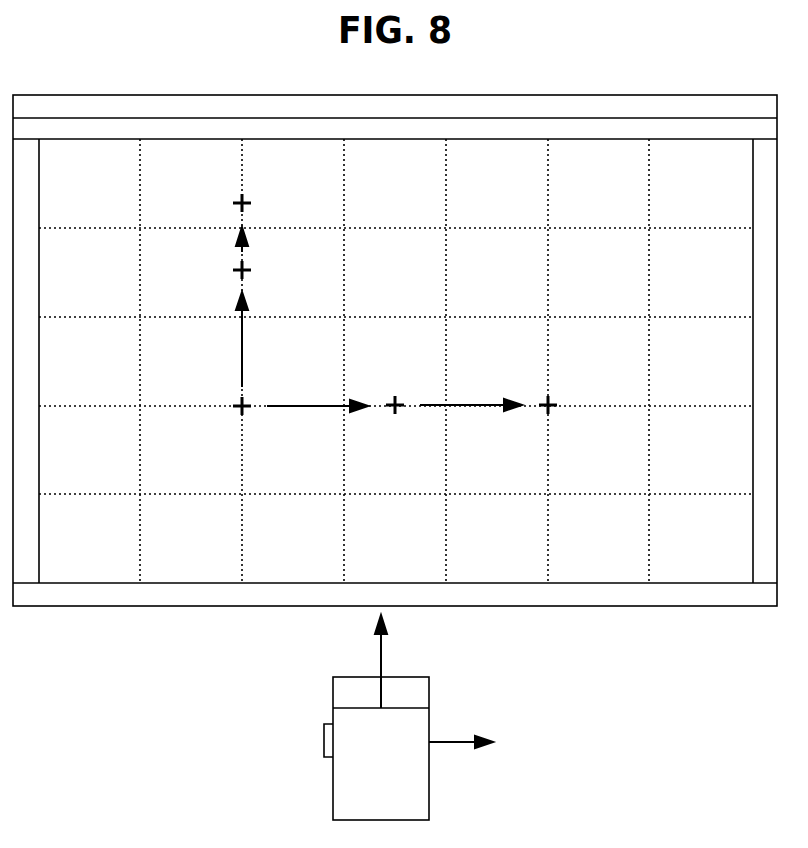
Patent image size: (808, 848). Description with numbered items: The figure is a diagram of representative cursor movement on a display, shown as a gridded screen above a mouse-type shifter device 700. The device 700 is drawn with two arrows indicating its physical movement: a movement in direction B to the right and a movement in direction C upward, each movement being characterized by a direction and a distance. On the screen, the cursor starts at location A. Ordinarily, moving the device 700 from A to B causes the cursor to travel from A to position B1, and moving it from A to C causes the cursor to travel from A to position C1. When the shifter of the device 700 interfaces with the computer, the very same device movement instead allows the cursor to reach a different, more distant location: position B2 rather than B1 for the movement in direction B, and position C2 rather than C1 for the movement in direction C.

The shifter device 700 is at (400, 783).
The cursor position A is at (250, 418).
The cursor position B1 is at (410, 417).
The cursor position B2 is at (565, 417).
The cursor position C1 is at (258, 281).
The cursor position C2 is at (258, 215).
The device movement direction B is at (474, 750).
The device movement direction C is at (394, 661).